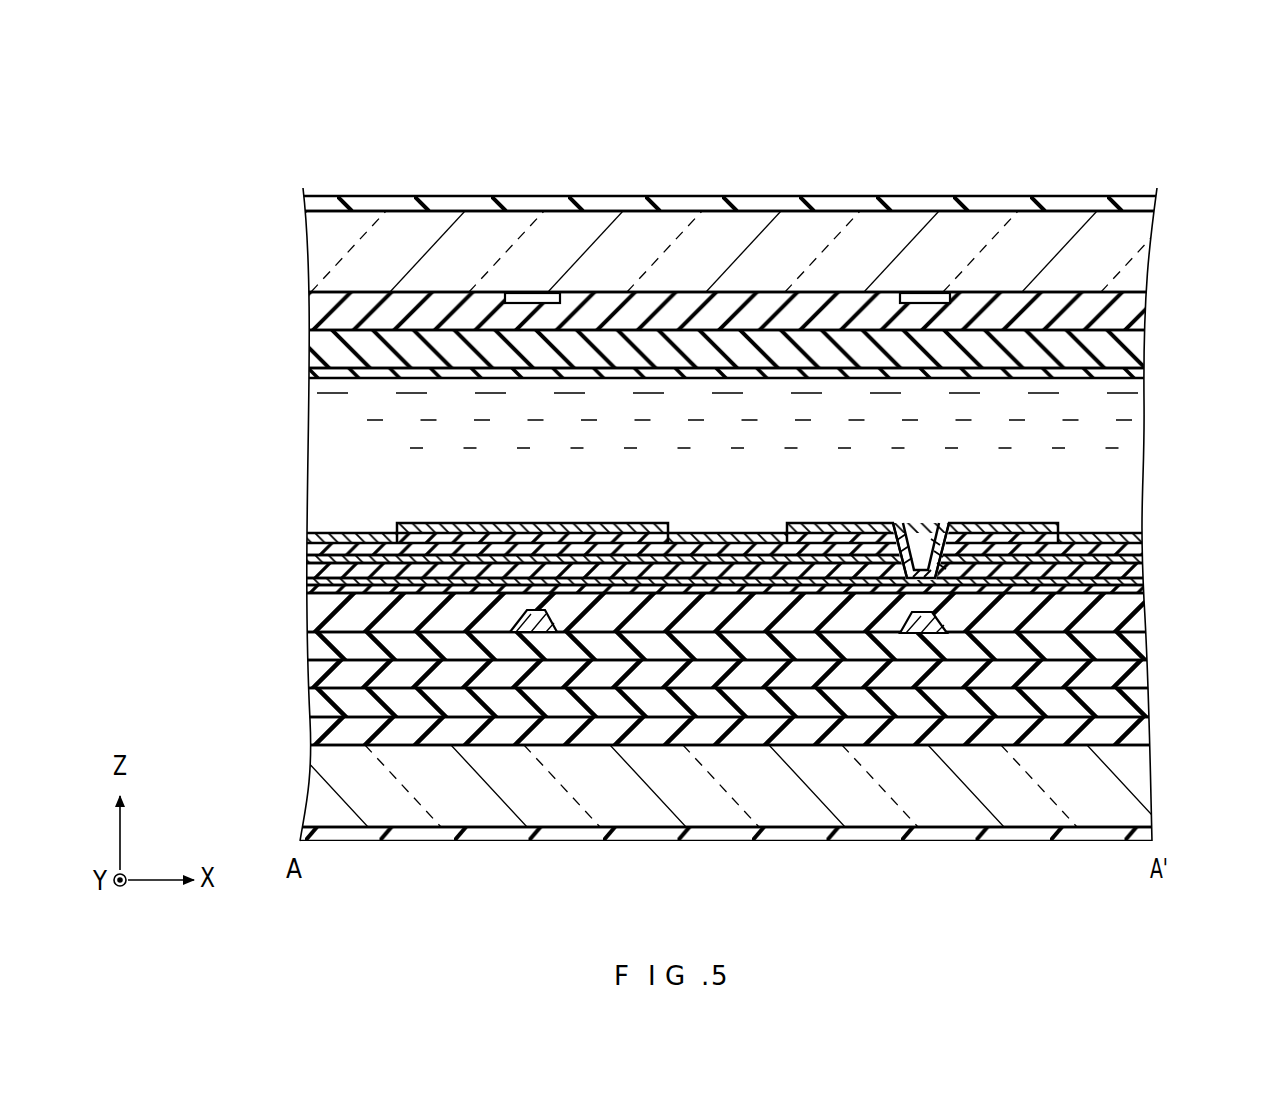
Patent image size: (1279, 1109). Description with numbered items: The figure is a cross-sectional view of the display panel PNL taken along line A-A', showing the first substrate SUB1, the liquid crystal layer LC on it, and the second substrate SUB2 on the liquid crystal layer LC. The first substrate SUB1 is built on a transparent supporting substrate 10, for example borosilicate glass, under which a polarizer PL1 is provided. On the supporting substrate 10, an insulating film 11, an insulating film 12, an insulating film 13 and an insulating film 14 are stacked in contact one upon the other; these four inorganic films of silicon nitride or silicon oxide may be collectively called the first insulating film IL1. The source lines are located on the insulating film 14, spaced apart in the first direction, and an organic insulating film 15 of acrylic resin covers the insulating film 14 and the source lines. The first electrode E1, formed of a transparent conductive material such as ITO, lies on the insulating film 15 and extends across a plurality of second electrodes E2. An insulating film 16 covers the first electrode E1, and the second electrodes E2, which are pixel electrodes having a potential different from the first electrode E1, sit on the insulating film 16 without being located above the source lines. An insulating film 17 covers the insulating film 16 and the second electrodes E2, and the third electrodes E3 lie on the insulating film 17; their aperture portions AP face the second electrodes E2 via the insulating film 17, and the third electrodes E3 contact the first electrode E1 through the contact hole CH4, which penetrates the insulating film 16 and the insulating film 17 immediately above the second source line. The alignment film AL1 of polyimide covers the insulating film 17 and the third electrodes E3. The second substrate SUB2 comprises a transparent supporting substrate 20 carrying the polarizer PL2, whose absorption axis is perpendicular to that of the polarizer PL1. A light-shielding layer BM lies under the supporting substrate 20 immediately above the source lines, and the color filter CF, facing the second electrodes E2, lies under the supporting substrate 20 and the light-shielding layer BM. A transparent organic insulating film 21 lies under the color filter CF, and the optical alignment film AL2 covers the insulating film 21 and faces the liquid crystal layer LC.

The display panel PNL is at (1117, 148).
The polarizer PL2 is at (323, 196).
The second substrate SUB2 is at (298, 281).
The supporting substrate 20 is at (472, 230).
The color filter CF is at (400, 305).
The light-shielding layer BM is at (530, 296).
The insulating film 21 is at (605, 348).
The alignment film AL2 is at (1143, 372).
The liquid crystal layer LC is at (330, 443).
The alignment film AL1 is at (1140, 538).
The aperture portion AP is at (342, 532).
The first electrode E1 is at (701, 582).
The second electrode E2 is at (382, 560).
The third electrode E3 is at (527, 536).
The contact hole CH4 is at (932, 560).
The insulating film (first insulating film) IL1 is at (1163, 668).
The insulating film 17 is at (795, 556).
The insulating film 16 is at (737, 578).
The insulating film 15 is at (693, 612).
The insulating film 14 is at (652, 648).
The insulating film 13 is at (597, 678).
The insulating film 12 is at (479, 708).
The insulating film 11 is at (440, 733).
The first substrate SUB1 is at (298, 772).
The supporting substrate 10 is at (404, 812).
The polarizer PL1 is at (345, 835).